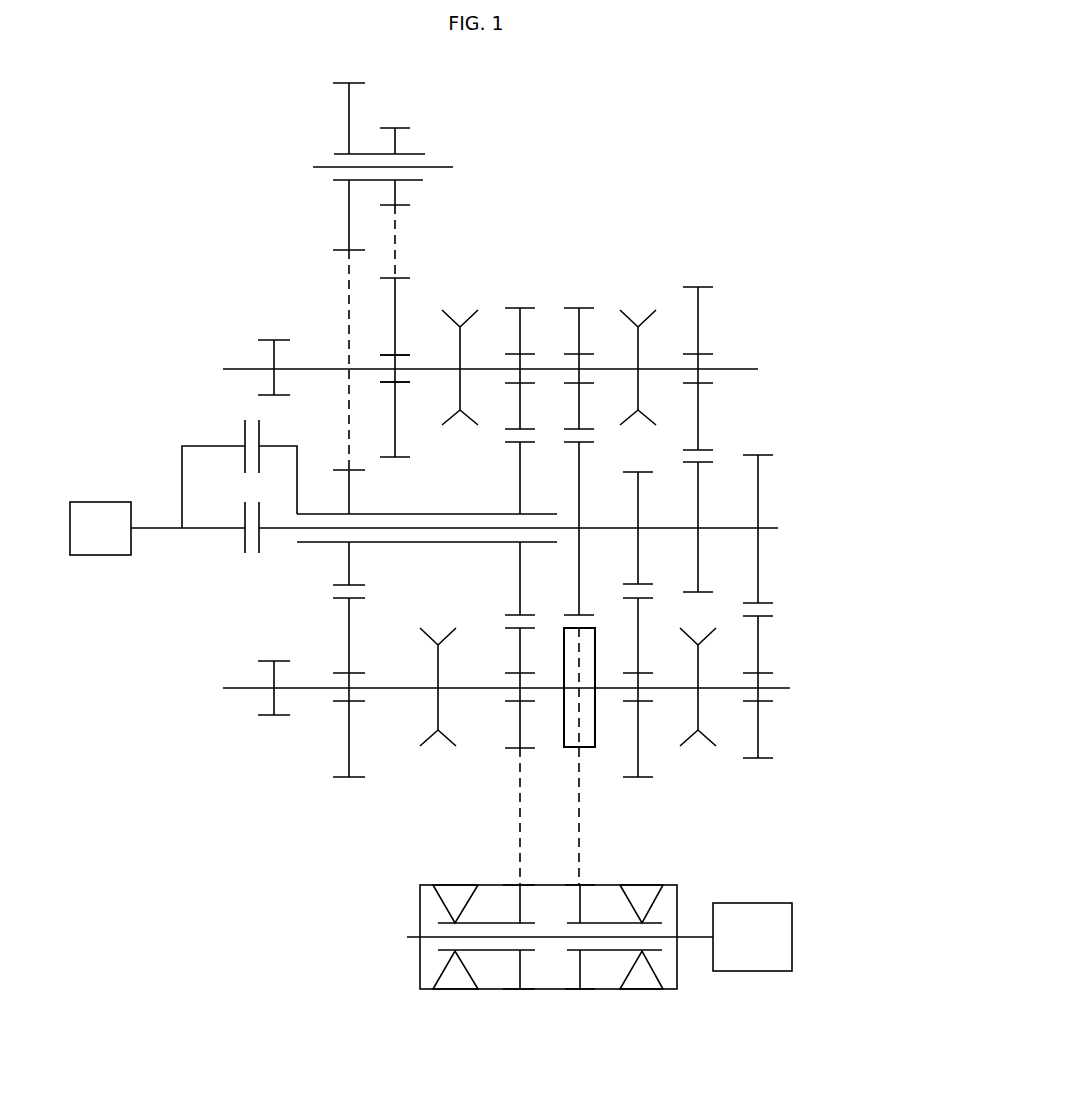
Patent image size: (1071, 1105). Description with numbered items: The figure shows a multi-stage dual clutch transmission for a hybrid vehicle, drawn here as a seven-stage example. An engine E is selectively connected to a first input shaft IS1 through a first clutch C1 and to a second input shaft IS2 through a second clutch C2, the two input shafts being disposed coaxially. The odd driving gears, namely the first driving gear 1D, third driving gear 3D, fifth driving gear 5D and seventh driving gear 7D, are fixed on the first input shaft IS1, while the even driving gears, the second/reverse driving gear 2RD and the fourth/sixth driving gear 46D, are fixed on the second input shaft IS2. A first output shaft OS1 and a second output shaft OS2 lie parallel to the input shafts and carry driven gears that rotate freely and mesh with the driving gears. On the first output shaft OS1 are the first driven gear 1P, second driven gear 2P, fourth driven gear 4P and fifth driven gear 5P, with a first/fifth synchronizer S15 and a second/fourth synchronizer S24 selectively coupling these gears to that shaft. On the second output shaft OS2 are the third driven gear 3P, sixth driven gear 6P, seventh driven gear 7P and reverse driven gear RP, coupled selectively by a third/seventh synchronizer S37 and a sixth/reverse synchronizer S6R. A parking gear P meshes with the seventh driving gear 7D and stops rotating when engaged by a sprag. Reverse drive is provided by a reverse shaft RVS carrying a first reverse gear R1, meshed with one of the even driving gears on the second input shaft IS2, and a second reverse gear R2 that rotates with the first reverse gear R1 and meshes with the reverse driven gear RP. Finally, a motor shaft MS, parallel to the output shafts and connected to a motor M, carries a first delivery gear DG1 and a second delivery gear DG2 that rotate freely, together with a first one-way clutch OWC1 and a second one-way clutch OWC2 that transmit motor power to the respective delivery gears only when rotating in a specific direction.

The engine E is at (100, 528).
The motor M is at (752, 937).
The first input shaft IS1 is at (772, 529).
The second input shaft IS2 is at (308, 542).
The first output shaft OS1 is at (242, 688).
The second output shaft OS2 is at (237, 368).
The first clutch C1 is at (243, 542).
The second clutch C2 is at (243, 432).
The reverse shaft RVS is at (445, 167).
The first reverse gear R1 is at (349, 288).
The second reverse gear R2 is at (395, 281).
The reverse driven gear RP is at (395, 298).
The sixth/reverse synchronizer S6R is at (460, 313).
The sixth driven gear 6P is at (520, 357).
The seventh driven gear 7P is at (579, 357).
The third/seventh synchronizer S37 is at (632, 320).
The third driven gear 3P is at (698, 357).
The second/reverse driving gear 2RD is at (345, 562).
The fourth/sixth driving gear 46D is at (520, 563).
The seventh driving gear 7D is at (580, 464).
The first driving gear 1D is at (638, 493).
The third driving gear 3D is at (698, 553).
The fifth driving gear 5D is at (758, 580).
The second driven gear 2P is at (338, 777).
The second/fourth synchronizer S24 is at (440, 748).
The fourth driven gear 4P is at (514, 749).
The parking gear P is at (594, 748).
The first driven gear 1P is at (638, 699).
The first/fifth synchronizer S15 is at (688, 742).
The fifth driven gear 5P is at (758, 699).
The motor shaft MS is at (553, 938).
The first one-way clutch OWC1 is at (453, 985).
The second one-way clutch OWC2 is at (645, 980).
The first delivery gear DG1 is at (515, 993).
The second delivery gear DG2 is at (590, 993).